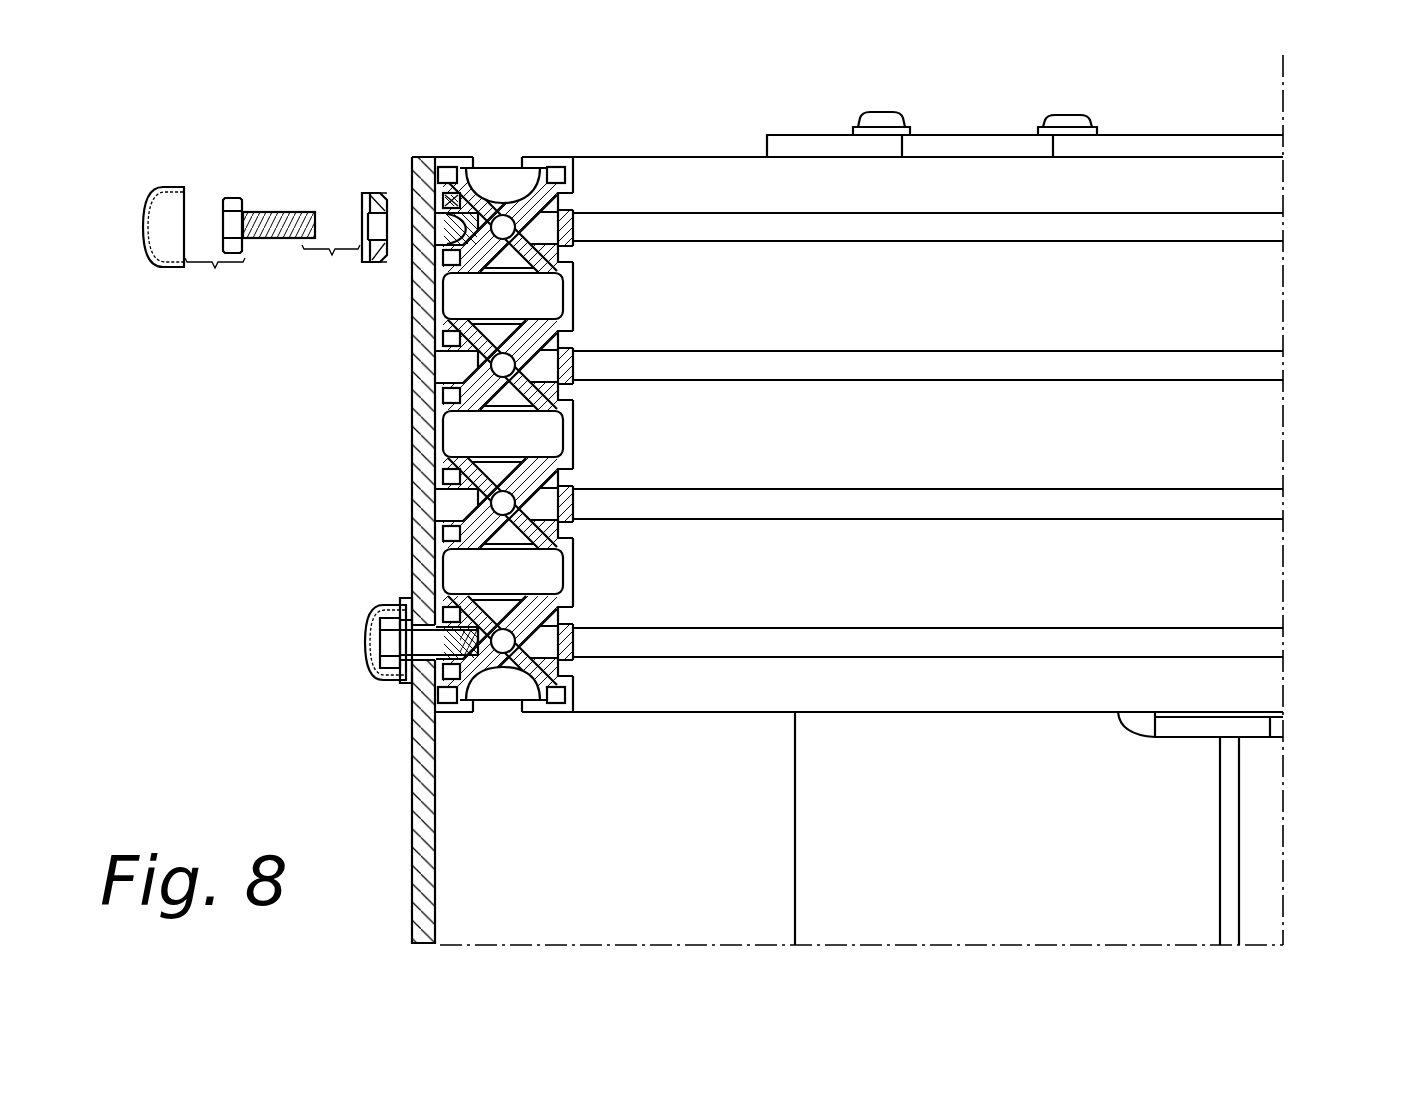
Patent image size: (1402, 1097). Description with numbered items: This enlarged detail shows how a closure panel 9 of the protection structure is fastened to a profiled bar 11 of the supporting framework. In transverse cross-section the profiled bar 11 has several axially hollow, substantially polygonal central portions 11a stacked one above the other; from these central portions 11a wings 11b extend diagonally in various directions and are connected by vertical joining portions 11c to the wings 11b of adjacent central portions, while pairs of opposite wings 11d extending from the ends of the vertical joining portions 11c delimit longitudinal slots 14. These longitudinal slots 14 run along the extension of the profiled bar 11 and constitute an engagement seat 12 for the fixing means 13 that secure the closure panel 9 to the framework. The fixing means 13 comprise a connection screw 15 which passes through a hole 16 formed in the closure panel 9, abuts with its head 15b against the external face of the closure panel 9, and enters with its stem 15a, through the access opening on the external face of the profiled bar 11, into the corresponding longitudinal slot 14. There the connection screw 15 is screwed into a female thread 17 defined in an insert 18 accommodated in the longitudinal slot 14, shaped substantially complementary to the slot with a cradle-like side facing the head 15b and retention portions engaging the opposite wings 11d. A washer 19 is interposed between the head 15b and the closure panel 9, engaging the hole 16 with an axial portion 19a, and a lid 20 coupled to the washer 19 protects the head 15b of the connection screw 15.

The closure panel 9 is at (435, 478).
The profiled bar 11 is at (960, 180).
The central portions 11a is at (523, 228).
The wings 11b is at (515, 200).
The vertical joining portions 11c is at (565, 295).
The opposite wings 11d is at (572, 212).
The engagement seat 12 is at (775, 215).
The fixing means 13 is at (222, 290).
The longitudinal slots 14 is at (853, 223).
The connection screw 15 is at (323, 383).
The stem 15a is at (278, 243).
The head 15b is at (232, 200).
The holes 16 is at (430, 213).
The female thread 17 is at (462, 188).
The insert 18 is at (493, 617).
The washer 19 is at (357, 410).
The axial portion 19a is at (375, 200).
The lid 20 is at (147, 248).